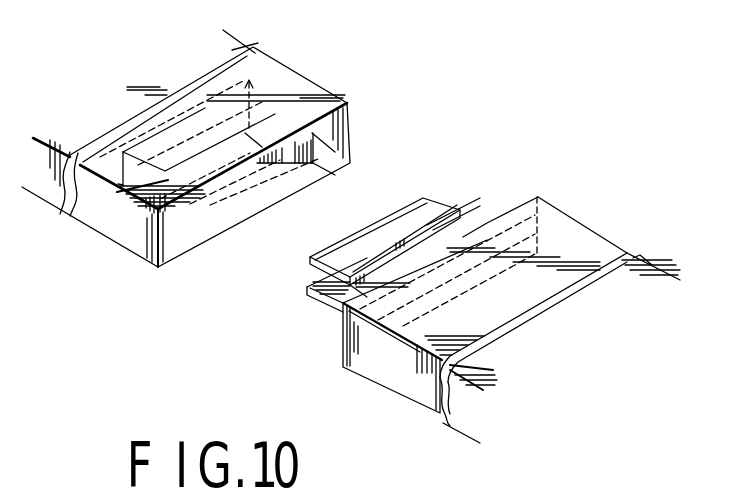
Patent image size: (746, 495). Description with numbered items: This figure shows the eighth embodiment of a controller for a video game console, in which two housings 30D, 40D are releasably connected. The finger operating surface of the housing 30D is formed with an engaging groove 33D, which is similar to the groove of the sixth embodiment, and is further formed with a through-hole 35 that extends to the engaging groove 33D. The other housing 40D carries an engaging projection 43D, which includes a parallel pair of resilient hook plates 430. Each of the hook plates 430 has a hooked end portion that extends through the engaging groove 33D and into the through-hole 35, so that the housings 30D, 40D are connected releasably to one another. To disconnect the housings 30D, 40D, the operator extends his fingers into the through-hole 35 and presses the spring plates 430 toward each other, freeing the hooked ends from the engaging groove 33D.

The housing 30D is at (255, 53).
The engaging groove 33D is at (317, 152).
The through-hole 35 is at (117, 185).
The housing 40D is at (660, 270).
The resilient hook plates 430 is at (320, 287).
The engaging projection 43D is at (331, 328).